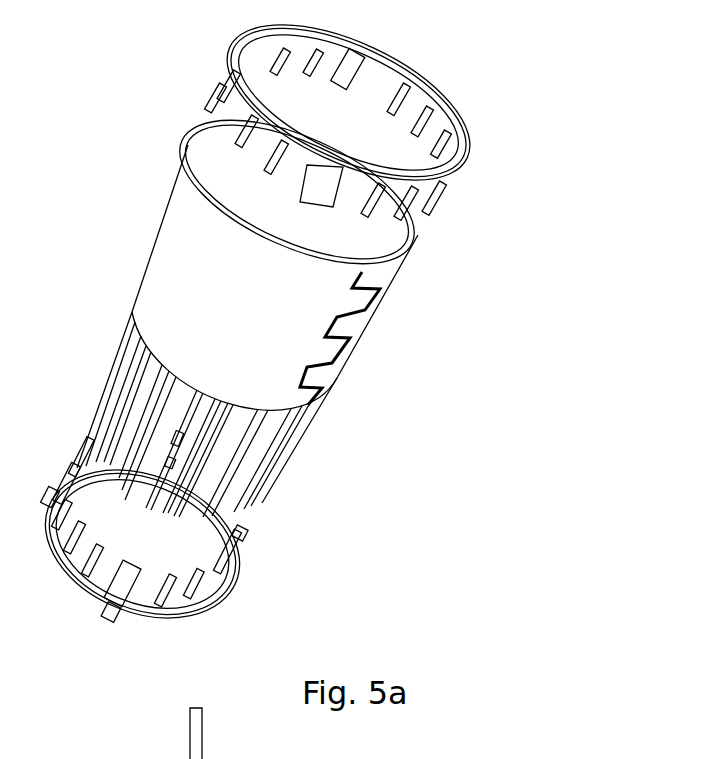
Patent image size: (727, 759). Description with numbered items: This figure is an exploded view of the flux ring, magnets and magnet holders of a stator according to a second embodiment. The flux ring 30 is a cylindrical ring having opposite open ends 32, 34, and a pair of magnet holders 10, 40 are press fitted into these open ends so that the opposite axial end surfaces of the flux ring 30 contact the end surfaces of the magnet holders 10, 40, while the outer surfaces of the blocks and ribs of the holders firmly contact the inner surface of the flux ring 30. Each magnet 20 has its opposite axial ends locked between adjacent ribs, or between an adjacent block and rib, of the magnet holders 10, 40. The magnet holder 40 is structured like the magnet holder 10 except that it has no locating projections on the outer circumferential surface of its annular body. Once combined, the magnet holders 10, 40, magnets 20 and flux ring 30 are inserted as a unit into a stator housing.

The magnet holder 10 is at (173, 620).
The magnet 20 is at (270, 457).
The flux ring 30 is at (365, 320).
The open end 32 is at (137, 323).
The open end 34 is at (421, 240).
The magnet holder 40 is at (468, 165).